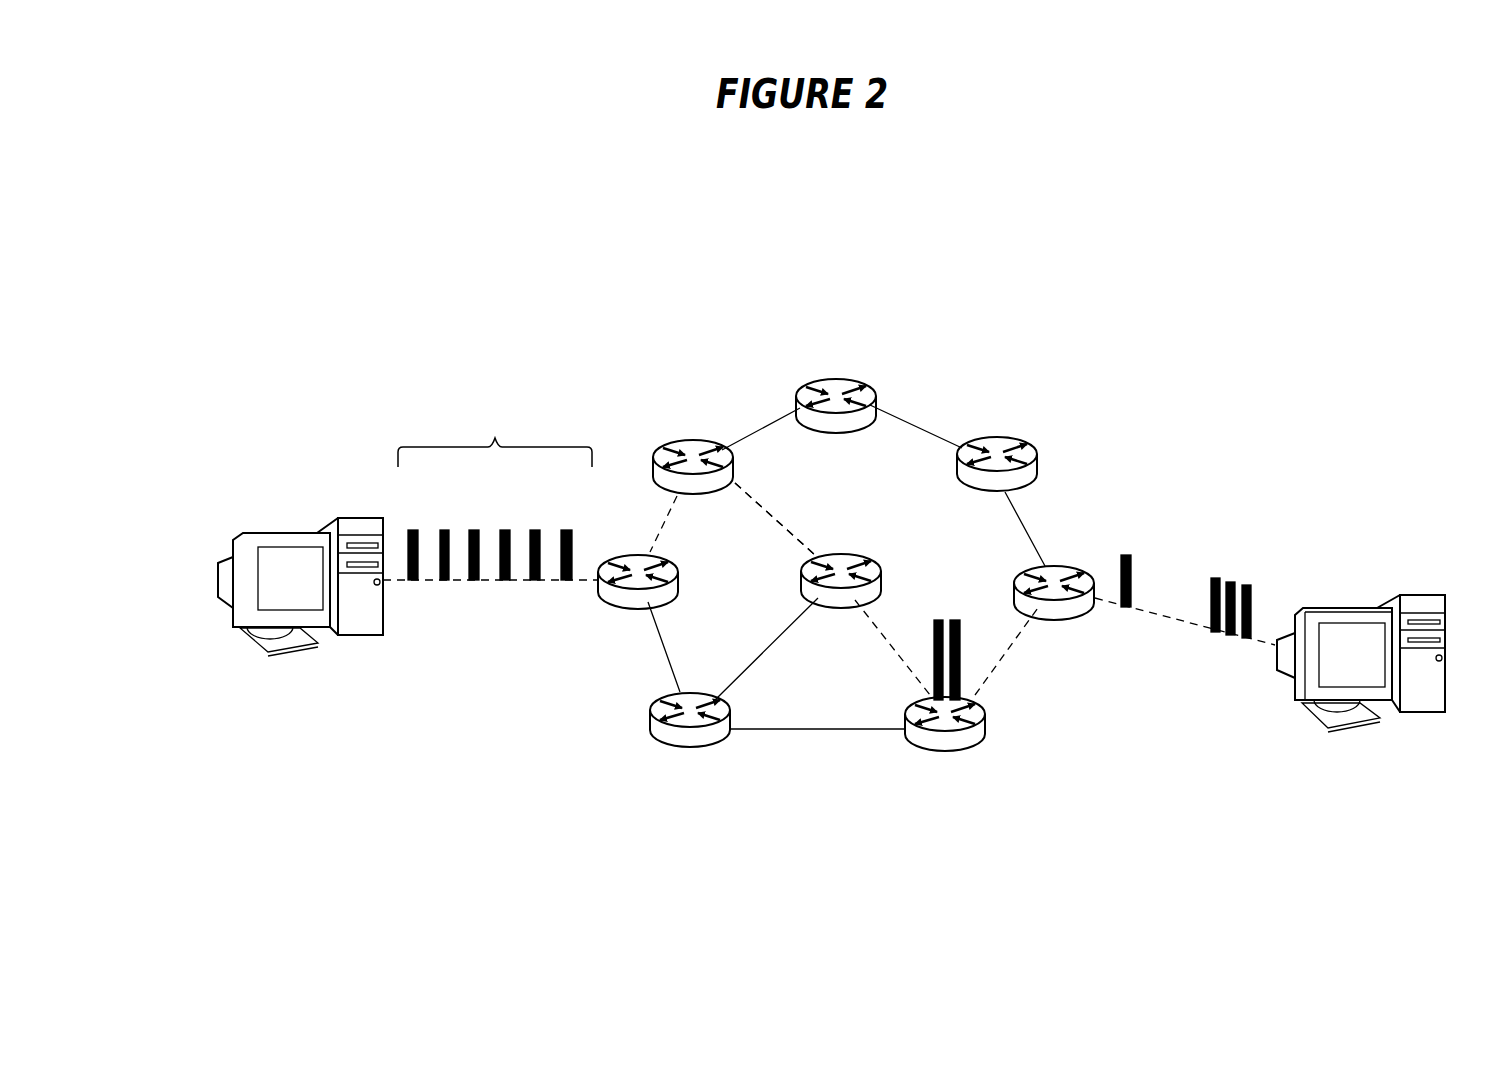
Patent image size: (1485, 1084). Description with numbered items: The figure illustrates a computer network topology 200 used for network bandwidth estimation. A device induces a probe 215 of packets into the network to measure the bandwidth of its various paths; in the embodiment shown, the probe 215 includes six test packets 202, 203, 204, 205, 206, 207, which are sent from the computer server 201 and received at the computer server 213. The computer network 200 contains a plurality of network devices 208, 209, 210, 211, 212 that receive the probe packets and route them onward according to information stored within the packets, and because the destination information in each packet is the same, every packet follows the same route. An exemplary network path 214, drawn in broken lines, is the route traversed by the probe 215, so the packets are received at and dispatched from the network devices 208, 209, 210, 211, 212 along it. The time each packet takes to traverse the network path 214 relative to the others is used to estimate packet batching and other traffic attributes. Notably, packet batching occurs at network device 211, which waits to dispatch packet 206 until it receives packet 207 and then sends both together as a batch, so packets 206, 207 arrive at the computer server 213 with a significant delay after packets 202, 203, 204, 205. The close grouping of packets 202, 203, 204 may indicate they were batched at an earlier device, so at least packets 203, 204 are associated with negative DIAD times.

The computer network topology 200 is at (238, 249).
The computer server 201 is at (210, 612).
The test packet 202 is at (568, 530).
The test packet 203 is at (535, 530).
The test packet 204 is at (505, 582).
The test packet 205 is at (473, 530).
The test packet 206 is at (445, 582).
The test packet 207 is at (412, 530).
The network device 208 is at (608, 600).
The network device 209 is at (688, 440).
The network device 210 is at (845, 554).
The network device 211 is at (975, 738).
The network device 212 is at (1052, 604).
The computer server 213 is at (1386, 734).
The network path 214 is at (765, 516).
The probe of packets 215 is at (495, 436).